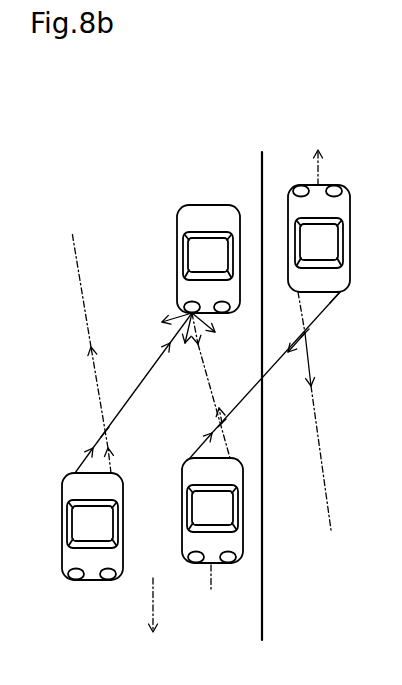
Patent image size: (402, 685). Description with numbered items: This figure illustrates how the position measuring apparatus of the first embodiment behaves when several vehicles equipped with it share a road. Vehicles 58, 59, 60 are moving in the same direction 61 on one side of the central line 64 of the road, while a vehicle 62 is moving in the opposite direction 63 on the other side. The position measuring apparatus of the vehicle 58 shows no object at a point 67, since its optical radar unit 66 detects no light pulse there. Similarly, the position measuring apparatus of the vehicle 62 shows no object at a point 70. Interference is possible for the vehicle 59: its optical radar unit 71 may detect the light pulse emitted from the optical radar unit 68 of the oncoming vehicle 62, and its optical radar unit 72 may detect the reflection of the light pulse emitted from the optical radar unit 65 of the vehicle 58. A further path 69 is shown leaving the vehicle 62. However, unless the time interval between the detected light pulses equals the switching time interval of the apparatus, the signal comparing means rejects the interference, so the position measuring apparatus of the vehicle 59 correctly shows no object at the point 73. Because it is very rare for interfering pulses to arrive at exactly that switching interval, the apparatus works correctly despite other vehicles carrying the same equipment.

The vehicle 58 is at (92, 582).
The vehicle 59 is at (262, 612).
The vehicle 60 is at (206, 205).
The direction 61 is at (156, 620).
The vehicle 62 is at (298, 208).
The opposite direction 63 is at (318, 154).
The central line of the road 64 is at (276, 396).
The optical radar unit 65 is at (75, 473).
The optical radar unit 66 is at (122, 473).
The point 67 is at (105, 432).
The optical radar unit 68 is at (340, 293).
The signal path from vehicle 62 69 is at (297, 293).
The point 70 is at (306, 334).
The optical radar unit 71 is at (190, 458).
The optical radar unit 72 is at (243, 456).
The point 73 is at (222, 423).